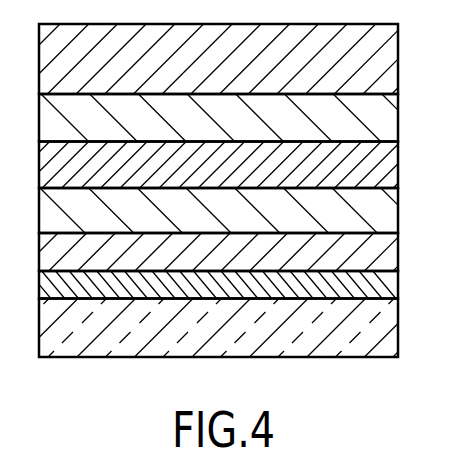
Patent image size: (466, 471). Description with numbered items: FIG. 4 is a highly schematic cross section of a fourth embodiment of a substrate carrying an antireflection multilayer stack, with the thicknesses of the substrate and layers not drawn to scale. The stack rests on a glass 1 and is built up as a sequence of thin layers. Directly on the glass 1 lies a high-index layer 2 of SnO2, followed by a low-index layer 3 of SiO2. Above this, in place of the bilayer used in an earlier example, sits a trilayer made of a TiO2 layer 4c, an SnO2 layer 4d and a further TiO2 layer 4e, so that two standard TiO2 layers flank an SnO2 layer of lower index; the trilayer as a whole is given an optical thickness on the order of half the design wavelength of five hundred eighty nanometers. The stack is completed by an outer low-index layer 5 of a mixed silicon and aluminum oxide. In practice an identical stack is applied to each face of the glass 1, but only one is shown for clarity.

The glass 1 is at (383, 332).
The high-index layer 2 is at (385, 283).
The low-index layer 3 is at (388, 245).
The TiO2 layer 4c is at (372, 207).
The SnO2 layer 4d is at (372, 163).
The TiO2 layer 4e is at (374, 124).
The low-index layer 5 is at (367, 54).